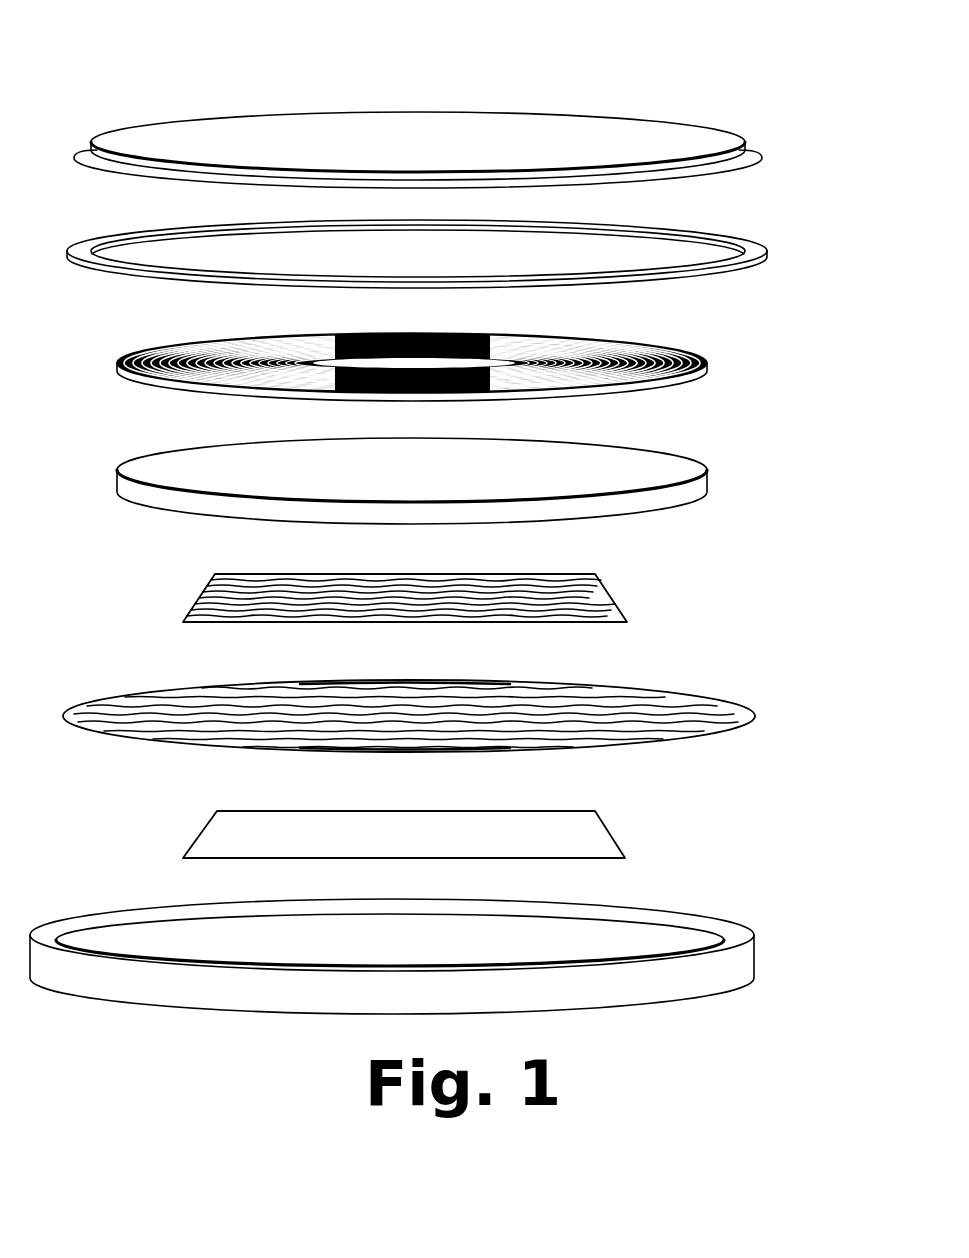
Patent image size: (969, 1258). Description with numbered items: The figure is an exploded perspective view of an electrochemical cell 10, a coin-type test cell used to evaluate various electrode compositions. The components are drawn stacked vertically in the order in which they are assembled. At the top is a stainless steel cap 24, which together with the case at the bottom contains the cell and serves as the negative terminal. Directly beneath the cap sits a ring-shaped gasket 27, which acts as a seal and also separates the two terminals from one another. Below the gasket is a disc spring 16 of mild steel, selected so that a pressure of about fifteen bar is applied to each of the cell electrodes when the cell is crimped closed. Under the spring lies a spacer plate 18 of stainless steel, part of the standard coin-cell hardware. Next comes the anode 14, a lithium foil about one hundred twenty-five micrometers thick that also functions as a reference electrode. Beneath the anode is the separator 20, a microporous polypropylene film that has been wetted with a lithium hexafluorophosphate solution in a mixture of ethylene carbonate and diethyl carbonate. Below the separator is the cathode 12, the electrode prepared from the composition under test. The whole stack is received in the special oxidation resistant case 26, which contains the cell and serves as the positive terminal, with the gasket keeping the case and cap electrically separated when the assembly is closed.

The electrochemical cell 10 is at (632, 76).
The stainless steel cap 24 is at (728, 144).
The gasket 27 is at (753, 253).
The disc spring 16 is at (690, 357).
The spacer plate 18 is at (668, 473).
The anode 14 is at (587, 597).
The separator 20 is at (705, 712).
The cathode 12 is at (585, 839).
The case 26 is at (735, 965).